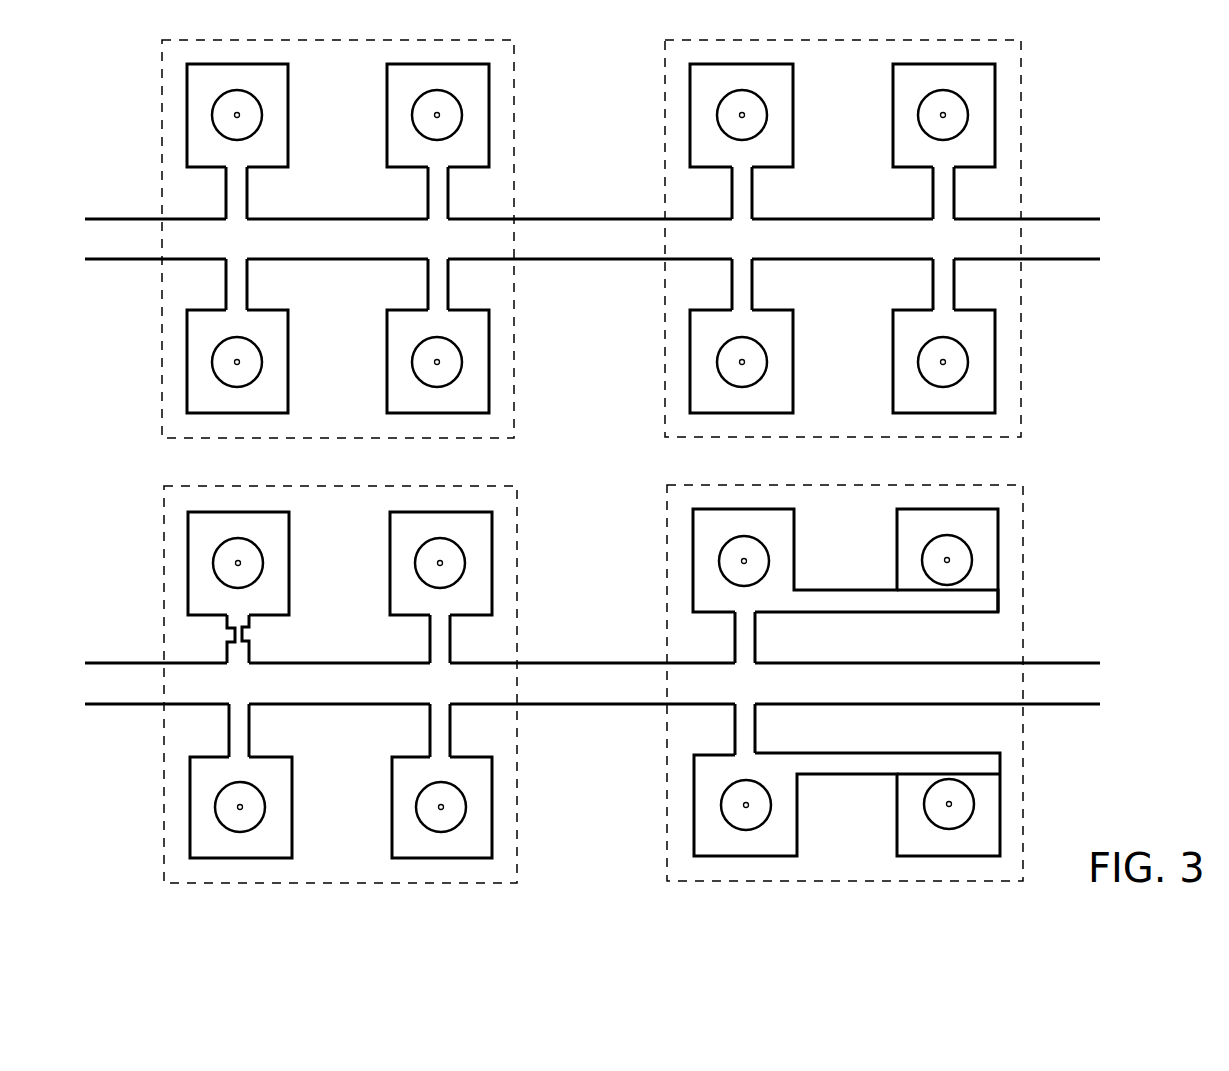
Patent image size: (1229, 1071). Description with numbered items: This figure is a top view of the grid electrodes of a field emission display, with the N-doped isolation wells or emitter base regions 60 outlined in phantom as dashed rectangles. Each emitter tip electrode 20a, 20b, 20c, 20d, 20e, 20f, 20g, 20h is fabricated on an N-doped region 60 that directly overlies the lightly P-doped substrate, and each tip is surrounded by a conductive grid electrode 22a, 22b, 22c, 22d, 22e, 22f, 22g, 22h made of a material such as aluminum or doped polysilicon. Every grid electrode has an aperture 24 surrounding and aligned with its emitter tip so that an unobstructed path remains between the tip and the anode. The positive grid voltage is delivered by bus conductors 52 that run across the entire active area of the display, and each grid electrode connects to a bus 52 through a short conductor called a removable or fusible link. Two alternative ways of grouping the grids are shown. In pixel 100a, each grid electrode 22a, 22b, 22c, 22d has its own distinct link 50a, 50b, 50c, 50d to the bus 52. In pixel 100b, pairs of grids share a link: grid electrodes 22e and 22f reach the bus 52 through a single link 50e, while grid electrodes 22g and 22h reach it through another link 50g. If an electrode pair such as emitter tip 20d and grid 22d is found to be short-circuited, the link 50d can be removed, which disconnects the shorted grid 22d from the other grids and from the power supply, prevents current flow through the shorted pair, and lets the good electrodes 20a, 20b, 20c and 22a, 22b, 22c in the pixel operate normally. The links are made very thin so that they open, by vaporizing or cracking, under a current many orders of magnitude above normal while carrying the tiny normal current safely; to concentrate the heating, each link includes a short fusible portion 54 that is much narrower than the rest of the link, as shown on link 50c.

The emitter tip electrode 20a is at (240, 807).
The emitter tip electrode 20b is at (441, 807).
The emitter tip electrode 20c is at (238, 563).
The emitter tip electrode 20d is at (443, 562).
The emitter tip electrode 20e is at (746, 805).
The emitter tip electrode 20f is at (949, 804).
The emitter tip electrode 20g is at (744, 561).
The emitter tip electrode 20h is at (947, 559).
The grid electrode 22a is at (198, 795).
The grid electrode 22b is at (484, 794).
The grid electrode 22c is at (197, 576).
The grid electrode 22d is at (483, 574).
The grid electrode 22e is at (702, 792).
The grid electrode 22f is at (992, 790).
The grid electrode 22g is at (700, 572).
The grid electrode 22h is at (990, 572).
The aperture 24 is at (430, 545).
The removable link 50a is at (245, 720).
The removable link 50b is at (433, 720).
The removable link 50c is at (252, 650).
The removable link 50d is at (435, 648).
The removable link 50e is at (745, 722).
The removable link 50g is at (748, 642).
The bus conductor 52 is at (137, 261).
The fusible portion 54 is at (232, 634).
The N-doped emitter base region 60 is at (162, 65).
The pixel 100a is at (252, 482).
The pixel 100b is at (755, 479).